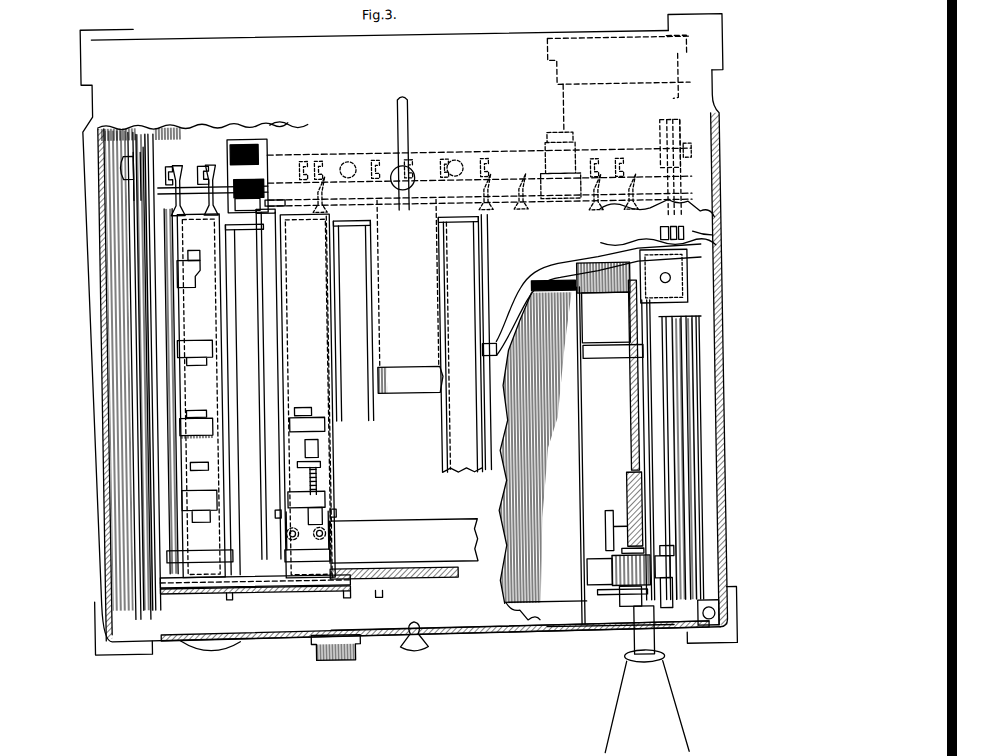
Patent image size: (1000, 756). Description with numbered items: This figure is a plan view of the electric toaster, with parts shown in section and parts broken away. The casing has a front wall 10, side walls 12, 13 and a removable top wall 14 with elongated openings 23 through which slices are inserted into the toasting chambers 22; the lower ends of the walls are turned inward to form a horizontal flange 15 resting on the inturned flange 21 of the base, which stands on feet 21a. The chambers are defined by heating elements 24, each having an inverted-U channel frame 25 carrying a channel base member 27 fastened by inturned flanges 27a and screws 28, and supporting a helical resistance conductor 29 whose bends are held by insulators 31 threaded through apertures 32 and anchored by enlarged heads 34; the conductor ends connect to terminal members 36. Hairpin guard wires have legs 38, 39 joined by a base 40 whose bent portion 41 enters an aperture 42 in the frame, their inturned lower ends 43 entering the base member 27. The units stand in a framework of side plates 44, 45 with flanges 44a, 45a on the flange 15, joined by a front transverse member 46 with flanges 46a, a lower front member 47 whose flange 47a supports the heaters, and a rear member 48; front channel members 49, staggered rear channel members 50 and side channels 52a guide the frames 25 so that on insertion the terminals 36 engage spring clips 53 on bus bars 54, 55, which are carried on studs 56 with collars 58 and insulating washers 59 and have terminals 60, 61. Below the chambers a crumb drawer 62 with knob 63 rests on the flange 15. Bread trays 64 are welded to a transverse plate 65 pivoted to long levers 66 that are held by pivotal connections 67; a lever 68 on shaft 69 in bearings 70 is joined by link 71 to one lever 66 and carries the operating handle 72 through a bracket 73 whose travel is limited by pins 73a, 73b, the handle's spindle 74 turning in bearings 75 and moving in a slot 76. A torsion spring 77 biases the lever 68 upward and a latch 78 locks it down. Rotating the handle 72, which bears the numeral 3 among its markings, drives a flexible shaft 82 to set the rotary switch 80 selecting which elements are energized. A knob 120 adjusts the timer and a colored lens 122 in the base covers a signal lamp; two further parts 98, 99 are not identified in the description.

The numeral marking on handle 3 is at (634, 700).
The front wall 10 is at (278, 640).
The side wall 12 is at (101, 465).
The side wall 13 is at (714, 238).
The top wall 14 is at (317, 43).
The horizontal flange 15 is at (195, 124).
The inturned flange 21 is at (702, 268).
The legs or feet 21a is at (85, 57).
The heating or toasting chambers 22 is at (328, 311).
The elongated openings 23 is at (329, 261).
The heating elements 24 is at (255, 395).
The metallic frame 25 is at (232, 380).
The channel-shaped base member 27 is at (326, 481).
The inturned flanges 27a is at (276, 520).
The screw fastening means 28 is at (284, 536).
The helical resistance conductor 29 is at (341, 482).
The insulating supporting members 31 is at (319, 447).
The apertures 32 is at (184, 420).
The enlarged heads 34 is at (289, 423).
The terminal members 36 is at (207, 167).
The guard wire leg 38 is at (273, 511).
The guard wire leg 39 is at (338, 514).
The base of guard wire 40 is at (351, 451).
The upraised or bent portion 41 is at (203, 460).
The aperture 42 is at (188, 486).
The lower ends of guard wires 43 is at (286, 496).
The upright metallic plate 44 is at (153, 491).
The flange 44a is at (138, 511).
The upright metallic plate 45 is at (664, 136).
The flange 45a is at (683, 425).
The transverse metallic member 46 is at (202, 584).
The inturned flanges 46a is at (162, 553).
The metallic member 47 is at (467, 566).
The inturned flange 47a is at (468, 521).
The transverse metallic member 48 is at (173, 218).
The channel members 49 is at (227, 585).
The channel members 50 is at (300, 397).
The U-shaped channels 52a is at (153, 211).
The spring contact clips 53 is at (174, 164).
The bus bar 54 is at (344, 161).
The bus bar 55 is at (473, 179).
The studs 56 is at (249, 137).
The collars 58 is at (258, 173).
The insulating washers 59 is at (265, 203).
The terminal 60 is at (303, 203).
The terminal 61 is at (451, 161).
The drawer 62 is at (476, 635).
The knob 63 is at (408, 655).
The tray 64 is at (328, 344).
The transverse supporting plate 65 is at (297, 590).
The levers 66 is at (141, 403).
The pivotal connections 67 is at (131, 165).
The lever 68 is at (645, 408).
The shaft 69 is at (569, 295).
The bearings 70 is at (667, 295).
The link 71 is at (668, 617).
The operating handle 72 is at (655, 753).
The bracket 73 is at (635, 590).
The pin 73a is at (630, 516).
The pin 73b is at (677, 550).
The shaft or pin 74 is at (622, 614).
The bearings 75 is at (630, 554).
The slot 76 is at (646, 634).
The torsion spring 77 is at (611, 304).
The latch 78 is at (606, 530).
The multiple position switch 80 is at (687, 102).
The flexible shaft 82 is at (632, 461).
The rod 98 is at (402, 108).
The roller 99 is at (407, 212).
The operating knob 120 is at (340, 671).
The colored lens 122 is at (209, 649).